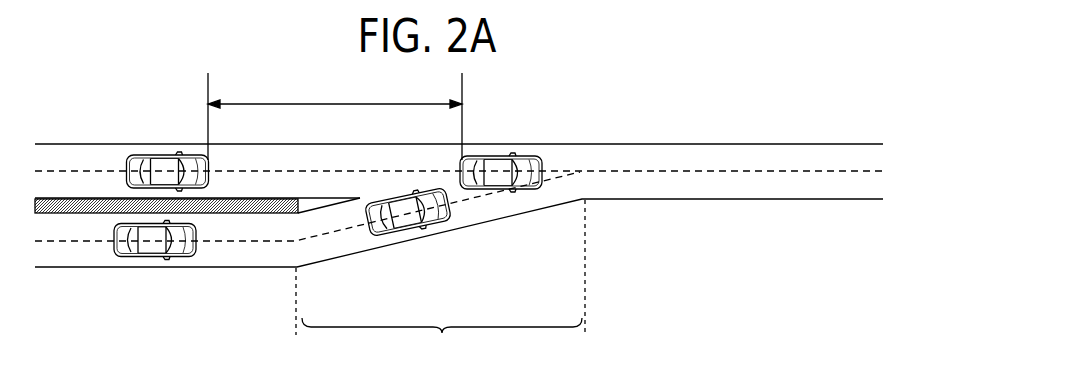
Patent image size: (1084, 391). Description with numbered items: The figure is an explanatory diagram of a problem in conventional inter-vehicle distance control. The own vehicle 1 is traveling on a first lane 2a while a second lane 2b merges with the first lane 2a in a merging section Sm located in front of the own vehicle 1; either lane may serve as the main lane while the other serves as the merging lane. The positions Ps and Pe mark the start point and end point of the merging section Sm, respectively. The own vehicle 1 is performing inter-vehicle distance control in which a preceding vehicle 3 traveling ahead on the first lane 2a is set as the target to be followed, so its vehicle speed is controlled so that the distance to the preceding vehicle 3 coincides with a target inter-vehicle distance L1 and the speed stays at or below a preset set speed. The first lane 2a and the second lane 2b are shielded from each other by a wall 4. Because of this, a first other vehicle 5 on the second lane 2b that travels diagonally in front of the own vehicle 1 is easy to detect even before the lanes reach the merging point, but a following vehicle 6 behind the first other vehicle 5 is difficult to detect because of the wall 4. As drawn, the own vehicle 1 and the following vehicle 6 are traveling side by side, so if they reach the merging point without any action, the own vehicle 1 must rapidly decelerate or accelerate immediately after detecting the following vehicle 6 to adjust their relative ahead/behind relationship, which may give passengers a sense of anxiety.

The own vehicle 1 is at (140, 155).
The first lane 2a is at (75, 158).
The second lane 2b is at (74, 255).
The preceding vehicle 3 is at (513, 157).
The wall 4 is at (257, 208).
The first other vehicle 5 is at (413, 227).
The following vehicle 6 is at (152, 257).
The target inter-vehicle distance L1 is at (335, 116).
The start point of the merging section Ps is at (294, 317).
The merging section Sm is at (442, 342).
The end point of the merging section Pe is at (585, 283).